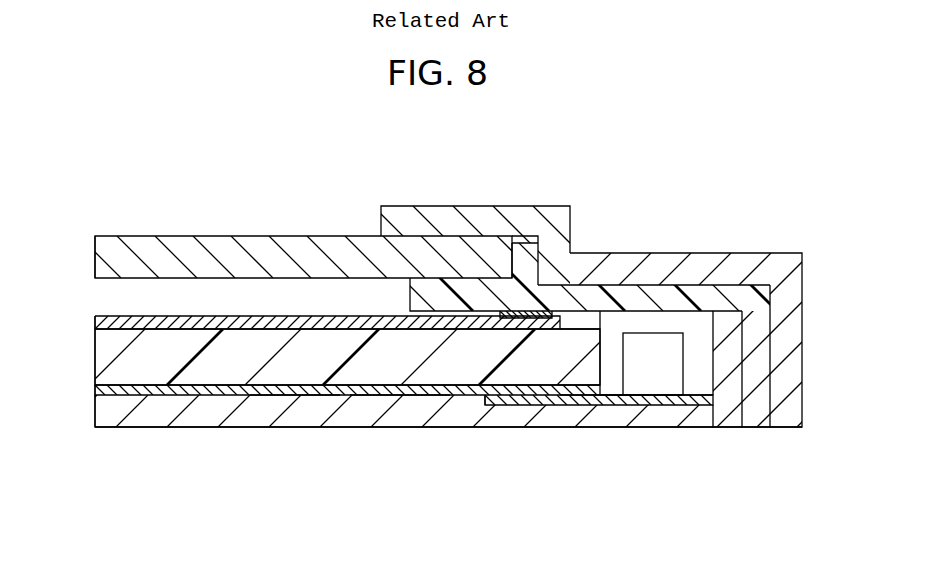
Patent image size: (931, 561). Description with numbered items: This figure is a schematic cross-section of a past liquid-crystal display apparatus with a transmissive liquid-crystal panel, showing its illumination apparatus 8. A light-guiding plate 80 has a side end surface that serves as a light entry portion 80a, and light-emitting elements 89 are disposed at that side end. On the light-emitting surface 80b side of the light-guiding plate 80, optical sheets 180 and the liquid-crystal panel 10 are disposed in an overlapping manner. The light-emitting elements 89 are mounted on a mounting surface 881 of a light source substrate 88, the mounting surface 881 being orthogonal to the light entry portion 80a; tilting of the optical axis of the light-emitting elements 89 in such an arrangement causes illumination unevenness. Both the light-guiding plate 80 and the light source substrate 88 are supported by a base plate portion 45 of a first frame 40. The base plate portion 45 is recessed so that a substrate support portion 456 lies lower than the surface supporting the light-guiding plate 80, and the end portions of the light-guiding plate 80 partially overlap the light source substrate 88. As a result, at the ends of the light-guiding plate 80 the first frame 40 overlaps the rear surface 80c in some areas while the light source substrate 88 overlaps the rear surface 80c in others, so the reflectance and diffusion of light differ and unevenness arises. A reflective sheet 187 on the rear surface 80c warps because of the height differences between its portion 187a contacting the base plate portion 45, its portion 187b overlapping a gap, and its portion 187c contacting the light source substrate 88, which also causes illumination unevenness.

The illumination apparatus 8 is at (132, 440).
The liquid-crystal panel 10 is at (290, 248).
The first frame 40 is at (350, 440).
The base plate portion 45 is at (393, 412).
The light-guiding plate 80 is at (220, 372).
The light entry portion 80a is at (600, 352).
The light-emitting surface 80b is at (240, 329).
The rear surface 80c is at (253, 395).
The light source substrate 88 is at (695, 413).
The light-emitting elements 89 is at (660, 372).
The optical sheets 180 is at (150, 316).
The reflective sheet 187 is at (167, 395).
The portion of the reflective sheet 187a is at (290, 393).
The portion of the reflective sheet 187b is at (492, 402).
The portion of the reflective sheet 187c is at (570, 402).
The substrate support portion 456 is at (607, 403).
The mounting surface 881 is at (638, 393).